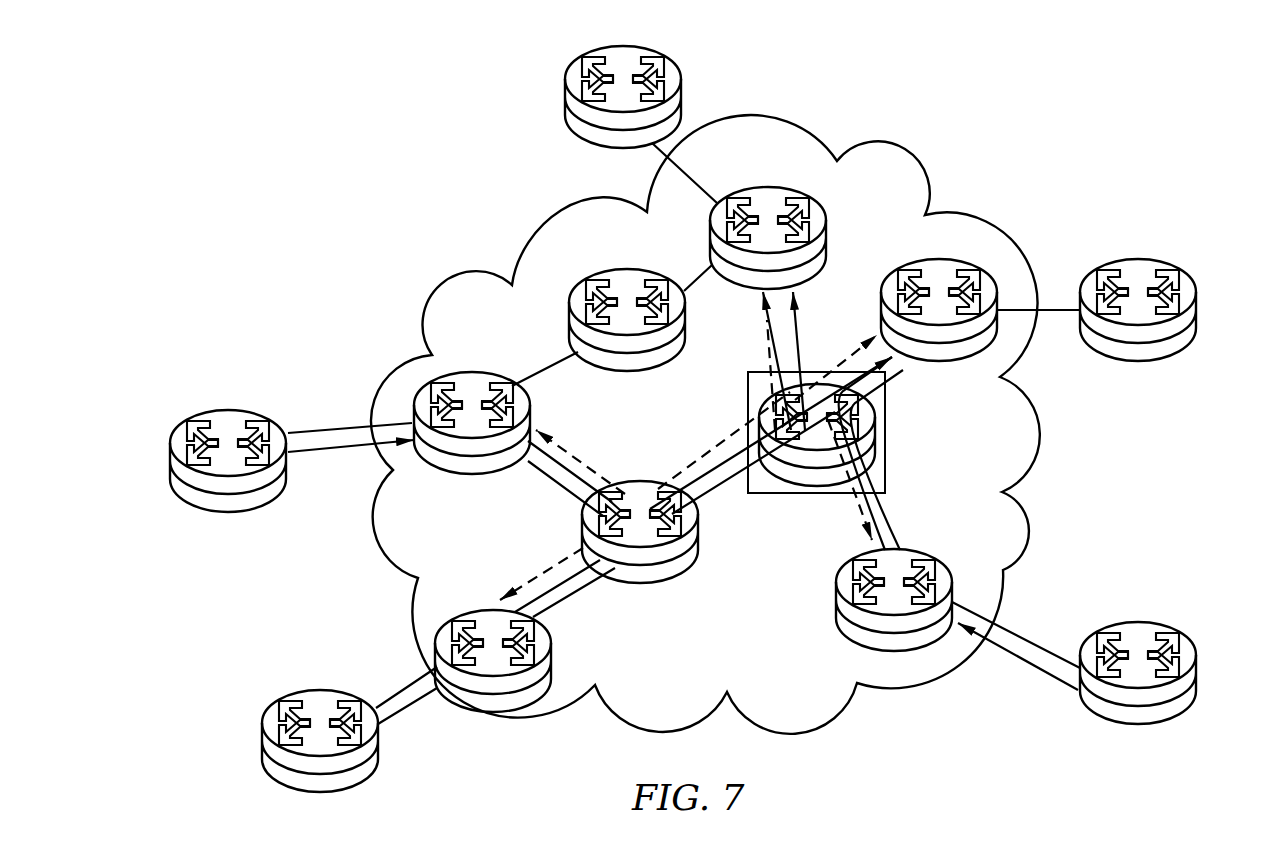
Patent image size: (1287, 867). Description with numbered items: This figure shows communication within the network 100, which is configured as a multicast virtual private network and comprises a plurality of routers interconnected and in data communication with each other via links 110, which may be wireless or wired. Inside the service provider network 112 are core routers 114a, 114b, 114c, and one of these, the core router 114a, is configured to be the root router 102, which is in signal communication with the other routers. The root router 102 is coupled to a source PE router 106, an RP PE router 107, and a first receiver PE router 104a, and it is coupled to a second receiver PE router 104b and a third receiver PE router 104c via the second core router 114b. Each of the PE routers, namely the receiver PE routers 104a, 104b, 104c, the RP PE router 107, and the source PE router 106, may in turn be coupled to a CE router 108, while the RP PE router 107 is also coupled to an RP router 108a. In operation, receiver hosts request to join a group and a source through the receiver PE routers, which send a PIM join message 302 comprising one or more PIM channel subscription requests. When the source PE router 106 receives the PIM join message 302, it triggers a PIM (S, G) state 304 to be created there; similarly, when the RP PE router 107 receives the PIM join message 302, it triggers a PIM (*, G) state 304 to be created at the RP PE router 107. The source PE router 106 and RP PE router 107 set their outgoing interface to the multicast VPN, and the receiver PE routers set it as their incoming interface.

The network 100 is at (372, 170).
The root router 102 is at (741, 400).
The first receiver PE router 104a is at (838, 590).
The second receiver PE router 104b is at (553, 650).
The third receiver PE router 104c is at (462, 372).
The source PE router 106 is at (826, 206).
The RP PE router 107 is at (997, 300).
The CE router 108 is at (566, 92).
The RP router 108a is at (1110, 268).
The link 110 is at (661, 152).
The service provider network 112 is at (705, 424).
The core router 114a is at (886, 434).
The second core router 114b is at (635, 585).
The core router 114c is at (603, 268).
The PIM join message 302 is at (800, 320).
The PIM state 304 is at (740, 352).